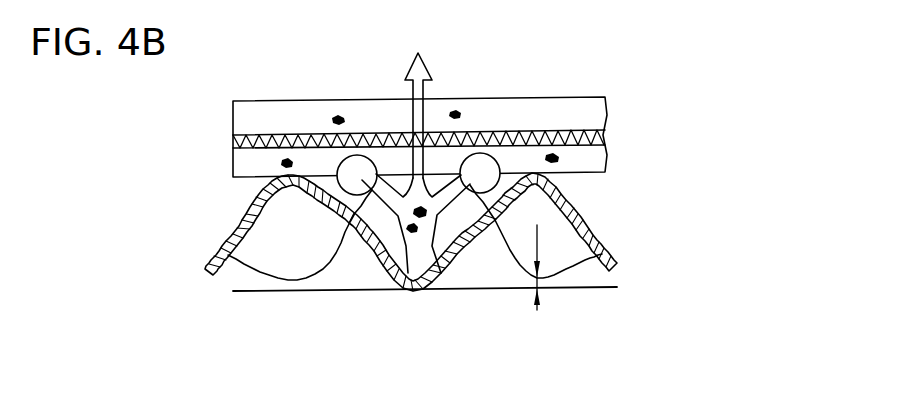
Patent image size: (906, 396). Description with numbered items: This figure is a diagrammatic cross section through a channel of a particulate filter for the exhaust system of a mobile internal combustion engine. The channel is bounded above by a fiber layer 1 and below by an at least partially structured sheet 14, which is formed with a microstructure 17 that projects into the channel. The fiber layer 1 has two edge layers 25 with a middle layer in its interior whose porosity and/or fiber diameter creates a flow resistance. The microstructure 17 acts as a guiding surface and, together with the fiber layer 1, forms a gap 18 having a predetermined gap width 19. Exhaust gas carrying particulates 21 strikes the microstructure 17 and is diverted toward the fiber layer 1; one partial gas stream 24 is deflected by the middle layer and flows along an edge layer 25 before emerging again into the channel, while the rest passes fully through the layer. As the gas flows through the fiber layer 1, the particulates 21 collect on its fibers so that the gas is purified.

The fiber layer 1 is at (329, 96).
The structured sheet 14 is at (617, 267).
The microstructure 17 is at (563, 233).
The gap 18 is at (506, 293).
The gap width 19 is at (577, 285).
The particulates 21 is at (458, 113).
The partial gas stream 24 is at (388, 134).
The edge layer 25 is at (243, 118).